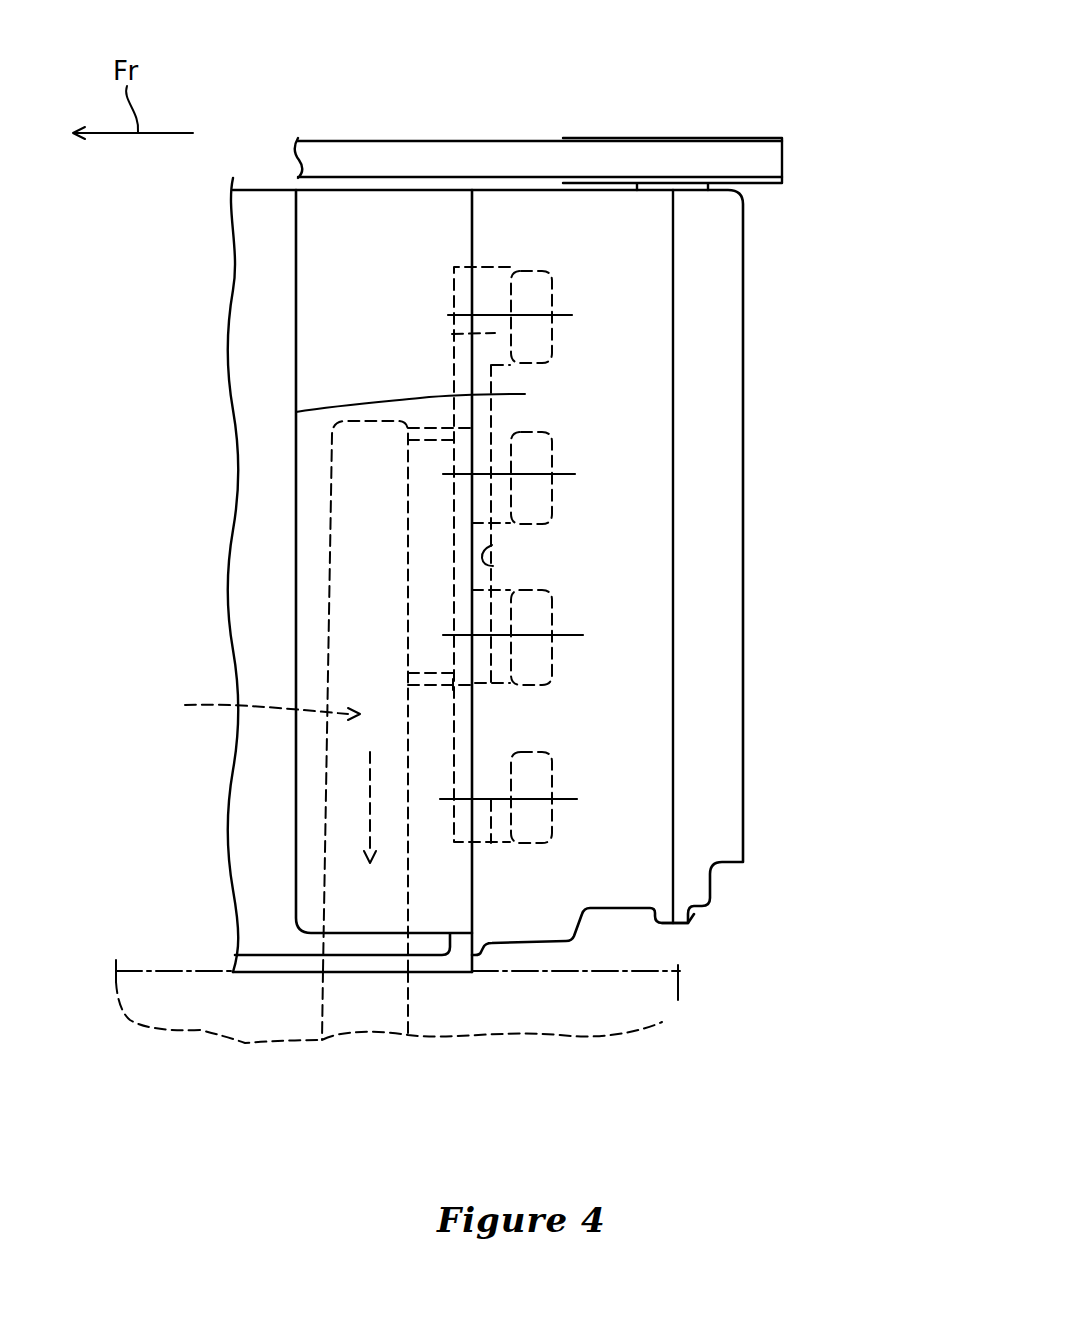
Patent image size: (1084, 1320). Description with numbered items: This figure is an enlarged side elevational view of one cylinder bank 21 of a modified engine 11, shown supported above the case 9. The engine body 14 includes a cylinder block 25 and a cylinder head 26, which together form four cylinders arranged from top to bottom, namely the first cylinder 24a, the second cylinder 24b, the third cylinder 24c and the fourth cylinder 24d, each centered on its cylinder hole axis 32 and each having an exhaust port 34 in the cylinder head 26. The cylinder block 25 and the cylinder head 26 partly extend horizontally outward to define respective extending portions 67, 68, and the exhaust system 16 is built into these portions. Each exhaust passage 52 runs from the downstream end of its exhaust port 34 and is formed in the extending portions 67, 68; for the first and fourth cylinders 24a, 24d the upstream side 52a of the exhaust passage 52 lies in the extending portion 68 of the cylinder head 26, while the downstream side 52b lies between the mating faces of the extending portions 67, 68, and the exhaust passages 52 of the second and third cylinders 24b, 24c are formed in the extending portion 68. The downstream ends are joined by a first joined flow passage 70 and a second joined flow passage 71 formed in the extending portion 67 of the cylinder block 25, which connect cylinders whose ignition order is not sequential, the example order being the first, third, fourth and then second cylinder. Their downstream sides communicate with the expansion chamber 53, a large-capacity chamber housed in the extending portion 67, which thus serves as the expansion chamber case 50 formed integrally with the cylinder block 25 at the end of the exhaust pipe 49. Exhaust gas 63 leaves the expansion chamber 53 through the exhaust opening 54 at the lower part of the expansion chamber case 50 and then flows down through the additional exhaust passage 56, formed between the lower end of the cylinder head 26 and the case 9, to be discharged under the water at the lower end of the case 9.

The engine 11 is at (811, 60).
The engine body 14 is at (788, 268).
The left cylinder bank 21 is at (488, 581).
The exhaust system 16 is at (532, 217).
The cylinder block 25 is at (347, 218).
The extending portion of cylinder block 67 is at (538, 158).
The cylinder head 26 is at (604, 218).
The extending portion of cylinder head 68 is at (672, 164).
The first cylinder 24a is at (650, 341).
The second cylinder 24b is at (630, 486).
The third cylinder 24c is at (630, 641).
The fourth cylinder 24d is at (625, 800).
The exhaust port 34 is at (548, 295).
The axis of cylinder hole 32 is at (520, 316).
The exhaust passage 52 is at (505, 293).
The upstream side of exhaust passage 52a is at (452, 334).
The downstream side of exhaust passage 52b is at (493, 566).
The exhaust pipe 49 is at (296, 412).
The expansion chamber case 50 is at (312, 486).
The first joined flow passage 70 is at (440, 690).
The second joined flow passage 71 is at (465, 684).
The expansion chamber 53 is at (253, 712).
The exhaust gas 63 is at (370, 797).
The exhaust opening 54 is at (322, 1040).
The additional exhaust passage 56 is at (360, 1018).
The case 9 is at (660, 1025).